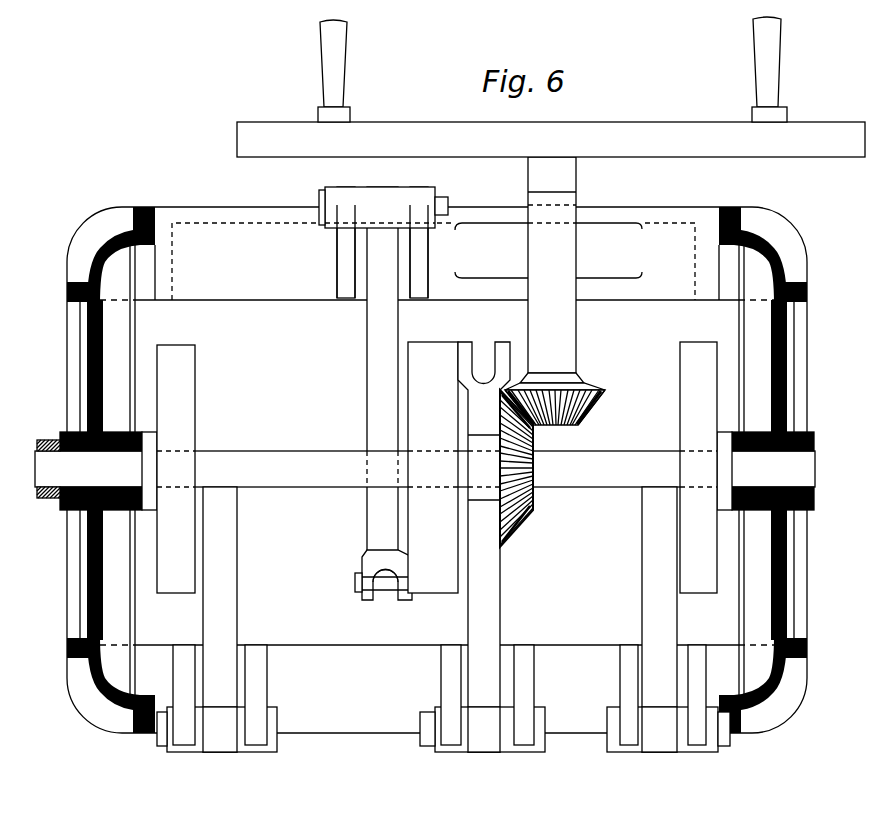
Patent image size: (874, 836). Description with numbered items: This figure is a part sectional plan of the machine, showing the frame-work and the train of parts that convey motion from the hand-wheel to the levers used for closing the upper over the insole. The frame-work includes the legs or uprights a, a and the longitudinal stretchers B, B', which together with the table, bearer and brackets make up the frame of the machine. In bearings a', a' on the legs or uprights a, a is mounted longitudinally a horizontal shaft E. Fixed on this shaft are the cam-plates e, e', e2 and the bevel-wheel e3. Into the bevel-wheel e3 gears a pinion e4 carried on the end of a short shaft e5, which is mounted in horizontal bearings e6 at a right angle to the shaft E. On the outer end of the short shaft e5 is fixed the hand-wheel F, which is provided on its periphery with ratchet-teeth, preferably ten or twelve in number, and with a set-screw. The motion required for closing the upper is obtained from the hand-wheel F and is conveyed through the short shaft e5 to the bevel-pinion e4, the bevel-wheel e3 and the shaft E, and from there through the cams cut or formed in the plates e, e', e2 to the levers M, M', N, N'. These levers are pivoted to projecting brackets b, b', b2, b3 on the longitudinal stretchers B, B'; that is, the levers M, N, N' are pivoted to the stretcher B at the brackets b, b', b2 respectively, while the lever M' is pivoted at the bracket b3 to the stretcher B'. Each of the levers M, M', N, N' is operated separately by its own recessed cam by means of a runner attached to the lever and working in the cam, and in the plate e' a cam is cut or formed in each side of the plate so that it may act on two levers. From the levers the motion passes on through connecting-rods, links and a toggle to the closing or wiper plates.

The legs or uprights a is at (434, 470).
The bearings a' is at (438, 480).
The longitudinal stretcher B is at (437, 674).
The longitudinal stretcher B' is at (437, 261).
The hand-wheel F is at (551, 87).
The horizontal shaft E is at (425, 469).
The cam-plate e is at (176, 469).
The cam-plate e' is at (433, 467).
The cam-plate e2 is at (698, 467).
The bevel-wheel e3 is at (522, 538).
The pinion e4 is at (600, 408).
The short shaft e5 is at (582, 338).
The horizontal bearings e6 is at (552, 265).
The lever M is at (220, 619).
The lever M' is at (383, 393).
The lever N is at (484, 547).
The lever N' is at (659, 619).
The projecting bracket b is at (217, 714).
The projecting bracket b' is at (482, 714).
The projecting bracket b2 is at (624, 755).
The projecting bracket b3 is at (350, 183).